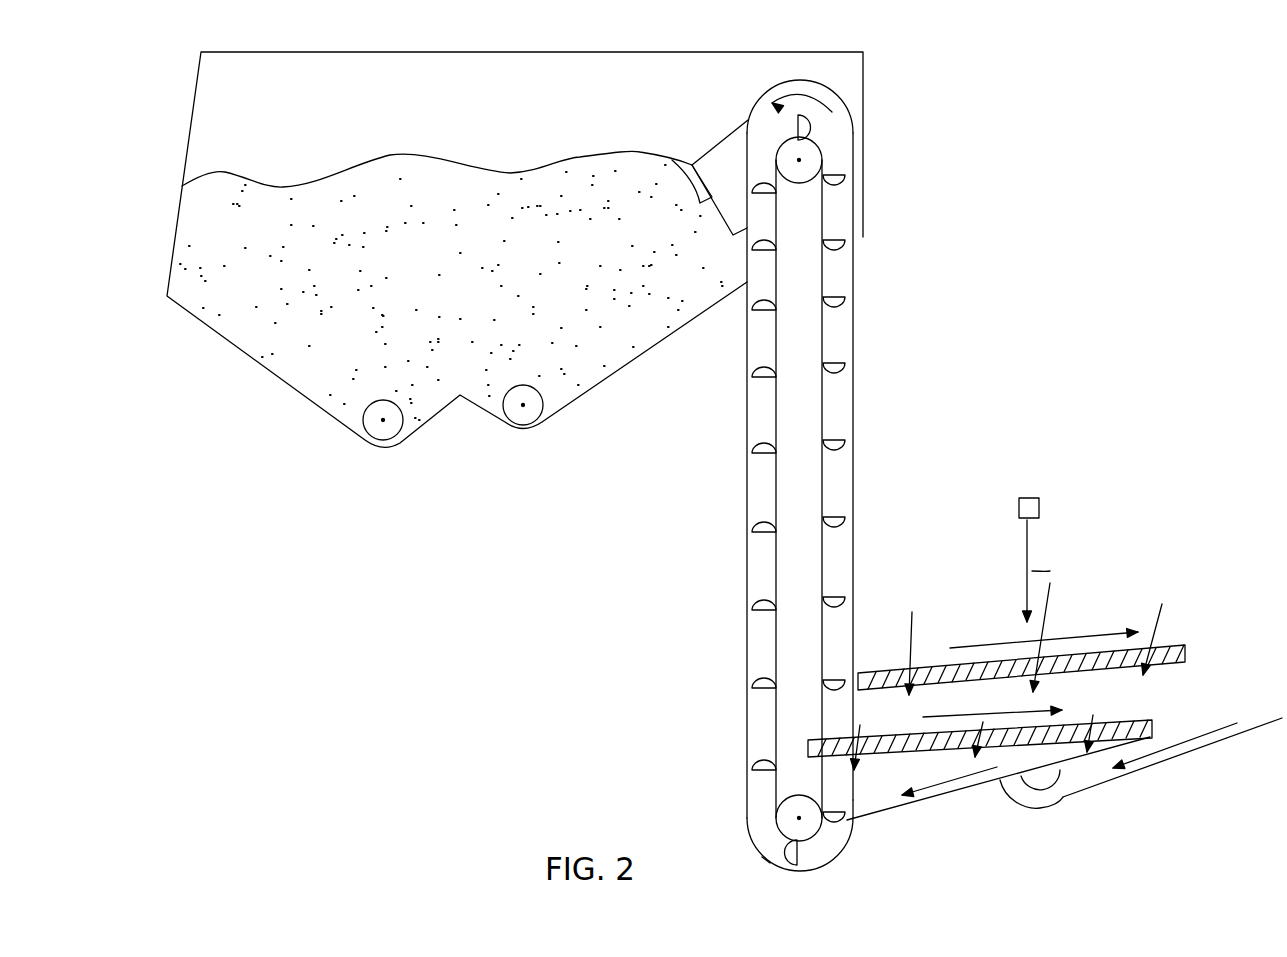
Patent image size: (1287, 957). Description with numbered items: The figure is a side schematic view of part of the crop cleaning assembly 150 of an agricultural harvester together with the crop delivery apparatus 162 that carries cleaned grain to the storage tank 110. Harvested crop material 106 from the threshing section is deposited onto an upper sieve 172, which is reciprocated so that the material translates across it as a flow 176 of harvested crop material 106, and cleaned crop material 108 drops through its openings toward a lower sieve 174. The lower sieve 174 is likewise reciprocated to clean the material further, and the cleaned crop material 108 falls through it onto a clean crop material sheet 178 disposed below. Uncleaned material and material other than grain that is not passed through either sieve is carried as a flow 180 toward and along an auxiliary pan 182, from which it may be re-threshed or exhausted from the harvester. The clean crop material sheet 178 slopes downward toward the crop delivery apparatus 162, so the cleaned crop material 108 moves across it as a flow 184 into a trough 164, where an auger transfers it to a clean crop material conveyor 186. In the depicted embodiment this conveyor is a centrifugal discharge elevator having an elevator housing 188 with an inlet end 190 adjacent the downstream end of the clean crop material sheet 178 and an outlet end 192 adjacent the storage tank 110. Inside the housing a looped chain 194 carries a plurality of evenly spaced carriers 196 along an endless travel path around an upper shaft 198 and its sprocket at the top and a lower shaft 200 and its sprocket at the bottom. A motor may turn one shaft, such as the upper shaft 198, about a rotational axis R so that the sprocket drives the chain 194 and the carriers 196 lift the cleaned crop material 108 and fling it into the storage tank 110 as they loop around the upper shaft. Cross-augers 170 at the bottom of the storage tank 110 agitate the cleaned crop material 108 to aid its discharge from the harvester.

The harvested crop material 106 is at (1035, 510).
The cleaned crop material 108 is at (385, 188).
The storage tank 110 is at (498, 52).
The crop cleaning assembly 150 is at (1112, 208).
The crop delivery apparatus 162 is at (892, 385).
The trough 164 is at (762, 857).
The cross-augers 170 is at (397, 432).
The upper sieve 172 is at (937, 655).
The lower sieve 174 is at (1137, 712).
The flow of harvested crop material 176 is at (1050, 583).
The clean crop material sheet 178 is at (918, 808).
The flow of MOG and remaining crop material 180 is at (1180, 738).
The auxiliary pan 182 is at (1112, 790).
The flow of cleaned crop material 184 is at (962, 778).
The clean crop material conveyor 186 is at (853, 480).
The elevator housing 188 is at (747, 550).
The inlet end 190 is at (851, 820).
The outlet end 192 is at (672, 160).
The looped chain 194 is at (823, 557).
The carriers 196 is at (752, 452).
The upper shaft 198 is at (799, 160).
The lower shaft 200 is at (797, 818).
The rotational axis R is at (795, 95).